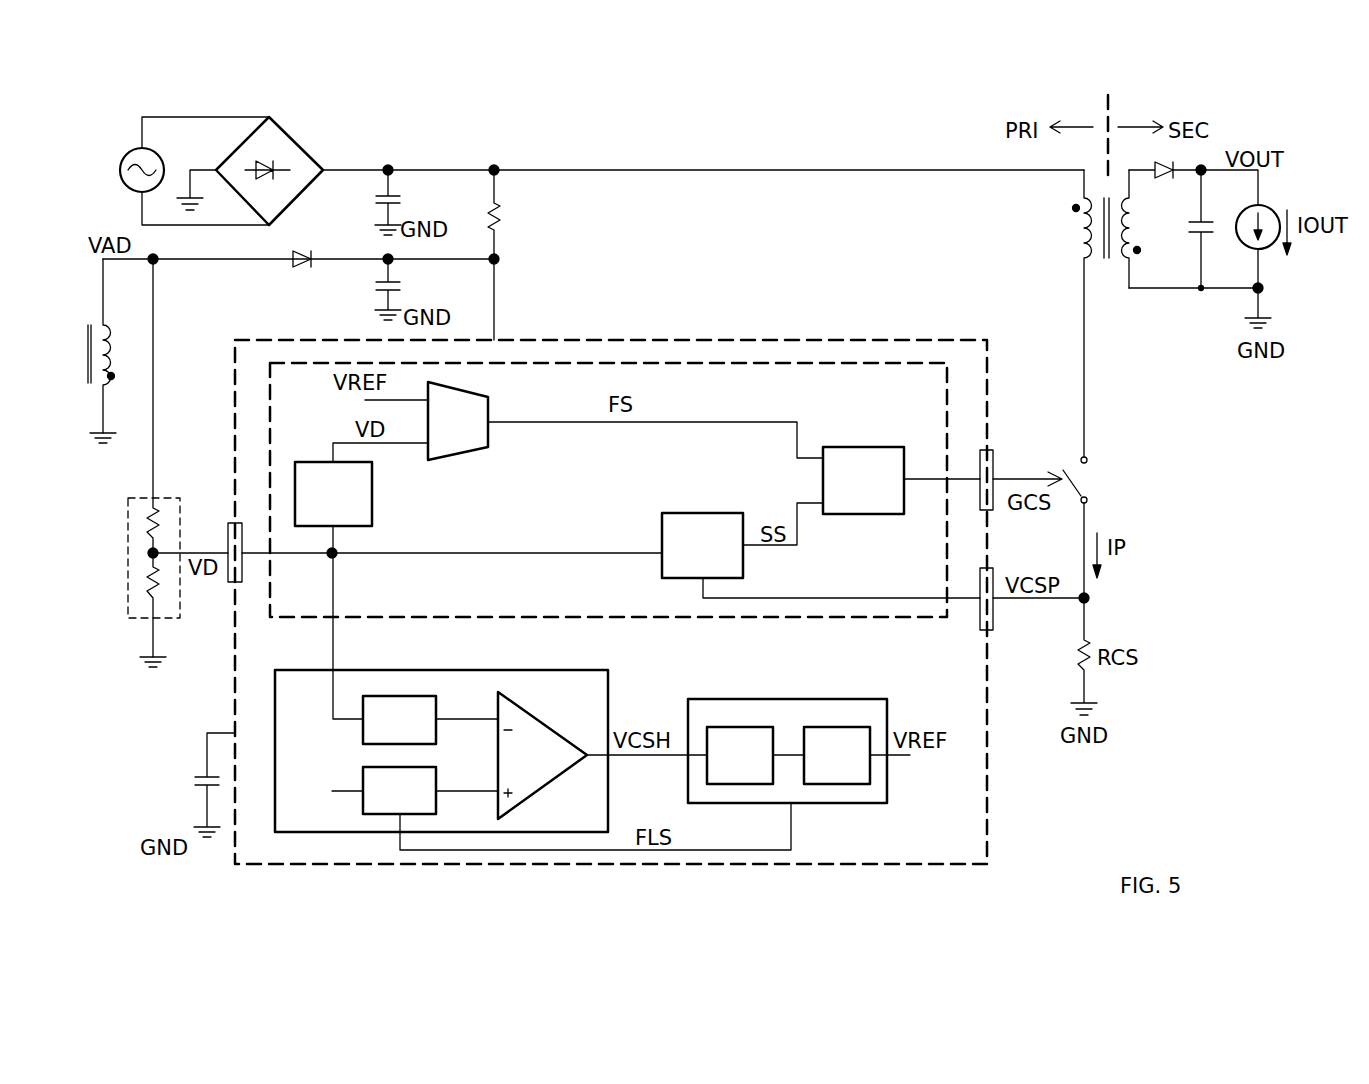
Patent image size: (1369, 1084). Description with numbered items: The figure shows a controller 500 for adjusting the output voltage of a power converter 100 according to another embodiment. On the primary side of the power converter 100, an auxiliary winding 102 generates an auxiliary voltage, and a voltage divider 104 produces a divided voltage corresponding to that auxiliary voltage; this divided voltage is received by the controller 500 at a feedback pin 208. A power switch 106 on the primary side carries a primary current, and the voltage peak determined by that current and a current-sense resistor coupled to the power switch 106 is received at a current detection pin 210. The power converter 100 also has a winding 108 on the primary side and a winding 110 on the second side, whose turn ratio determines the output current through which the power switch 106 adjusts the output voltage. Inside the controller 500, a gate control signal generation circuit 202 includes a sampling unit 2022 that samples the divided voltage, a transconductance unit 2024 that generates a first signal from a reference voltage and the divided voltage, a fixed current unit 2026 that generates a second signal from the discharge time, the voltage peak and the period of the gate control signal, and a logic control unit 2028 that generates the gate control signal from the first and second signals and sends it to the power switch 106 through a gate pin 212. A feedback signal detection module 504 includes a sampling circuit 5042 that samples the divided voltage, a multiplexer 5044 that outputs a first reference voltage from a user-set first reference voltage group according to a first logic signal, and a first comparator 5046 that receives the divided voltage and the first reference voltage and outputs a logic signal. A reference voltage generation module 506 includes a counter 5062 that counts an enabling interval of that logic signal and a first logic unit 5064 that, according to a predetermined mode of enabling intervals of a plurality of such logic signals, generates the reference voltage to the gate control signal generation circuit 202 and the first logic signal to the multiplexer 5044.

The power converter 100 is at (835, 137).
The auxiliary winding 102 is at (108, 346).
The voltage divider 104 is at (127, 594).
The power switch 106 is at (1091, 483).
The winding of the primary side 108 is at (1078, 233).
The winding of the second side 110 is at (1128, 262).
The gate control signal generation circuit 202 is at (877, 618).
The feedback pin 208 is at (227, 537).
The current detection pin 210 is at (995, 617).
The gate pin 212 is at (997, 461).
The controller 500 is at (752, 340).
The feedback signal detection module 504 is at (441, 733).
The reference voltage generation module 506 is at (787, 723).
The sampling unit 2022 is at (333, 494).
The transconductance unit 2024 is at (458, 421).
The fixed current unit 2026 is at (702, 545).
The logic control unit 2028 is at (863, 480).
The sampling circuit 5042 is at (399, 720).
The multiplexer 5044 is at (399, 790).
The first comparator 5046 is at (548, 725).
The counter 5062 is at (740, 755).
The first logic unit 5064 is at (837, 755).